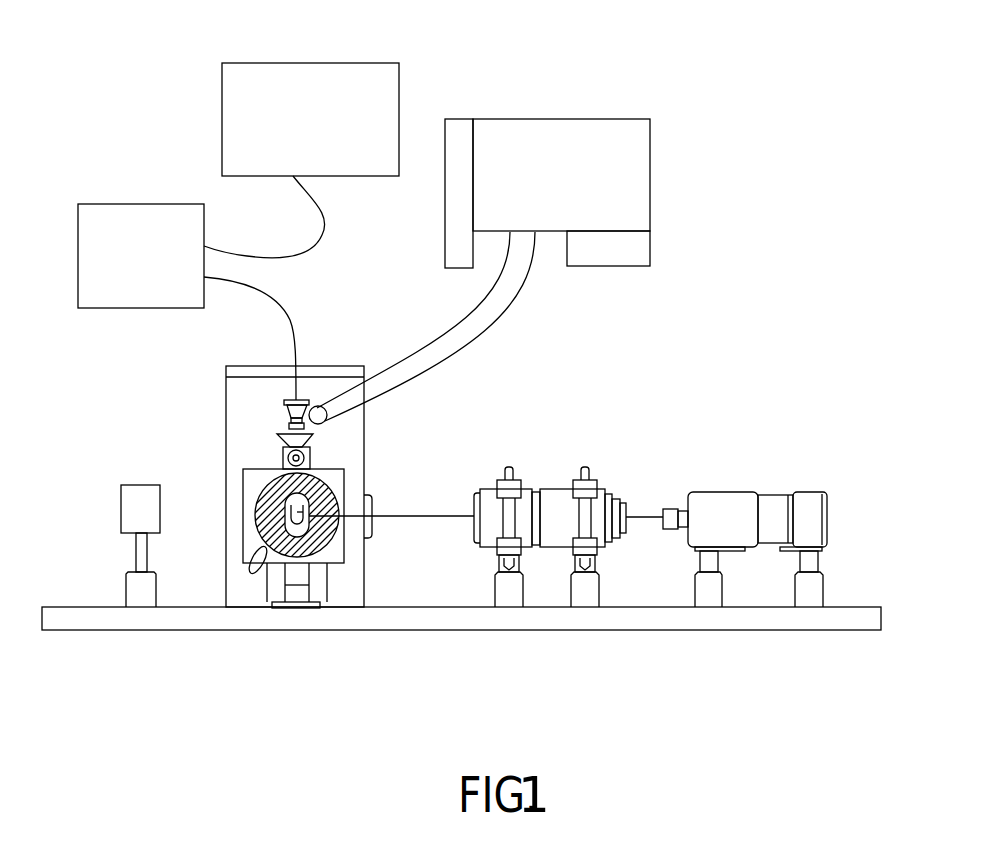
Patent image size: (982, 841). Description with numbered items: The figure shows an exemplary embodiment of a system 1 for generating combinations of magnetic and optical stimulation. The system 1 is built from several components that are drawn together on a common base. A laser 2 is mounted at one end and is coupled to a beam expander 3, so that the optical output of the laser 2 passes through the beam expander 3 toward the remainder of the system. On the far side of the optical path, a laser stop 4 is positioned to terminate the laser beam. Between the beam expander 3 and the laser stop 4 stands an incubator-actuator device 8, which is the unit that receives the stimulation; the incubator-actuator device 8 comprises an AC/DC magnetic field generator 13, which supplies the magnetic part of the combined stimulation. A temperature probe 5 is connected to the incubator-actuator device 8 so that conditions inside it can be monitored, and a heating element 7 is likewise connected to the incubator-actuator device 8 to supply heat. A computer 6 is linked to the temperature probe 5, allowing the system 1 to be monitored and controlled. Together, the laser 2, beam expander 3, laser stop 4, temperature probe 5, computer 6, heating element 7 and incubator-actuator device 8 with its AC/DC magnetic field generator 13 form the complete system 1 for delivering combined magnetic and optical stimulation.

The system 1 is at (782, 87).
The laser 2 is at (732, 492).
The beam expander 3 is at (552, 489).
The laser stop 4 is at (131, 485).
The temperature probe 5 is at (100, 204).
The computer 6 is at (255, 63).
The heating element 7 is at (545, 119).
The incubator-actuator device 8 is at (325, 366).
The AC/DC magnetic field generator 13 is at (322, 503).